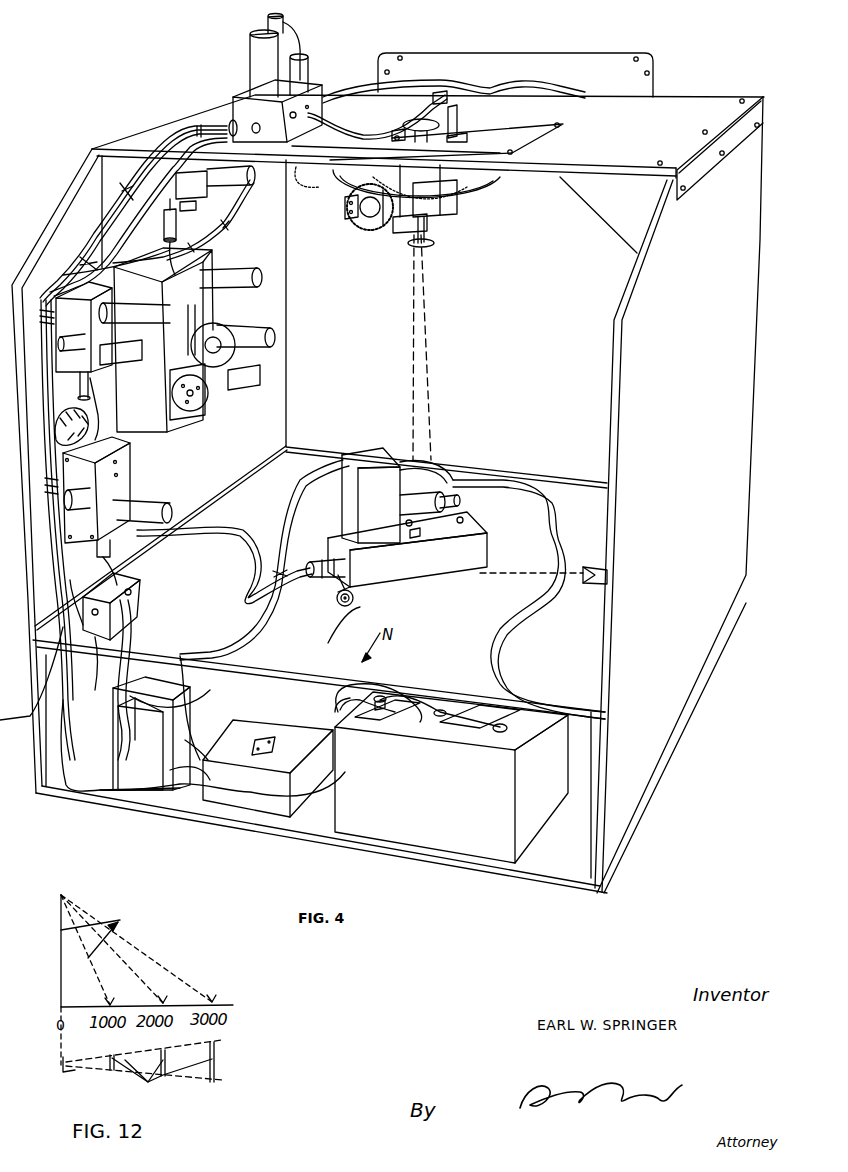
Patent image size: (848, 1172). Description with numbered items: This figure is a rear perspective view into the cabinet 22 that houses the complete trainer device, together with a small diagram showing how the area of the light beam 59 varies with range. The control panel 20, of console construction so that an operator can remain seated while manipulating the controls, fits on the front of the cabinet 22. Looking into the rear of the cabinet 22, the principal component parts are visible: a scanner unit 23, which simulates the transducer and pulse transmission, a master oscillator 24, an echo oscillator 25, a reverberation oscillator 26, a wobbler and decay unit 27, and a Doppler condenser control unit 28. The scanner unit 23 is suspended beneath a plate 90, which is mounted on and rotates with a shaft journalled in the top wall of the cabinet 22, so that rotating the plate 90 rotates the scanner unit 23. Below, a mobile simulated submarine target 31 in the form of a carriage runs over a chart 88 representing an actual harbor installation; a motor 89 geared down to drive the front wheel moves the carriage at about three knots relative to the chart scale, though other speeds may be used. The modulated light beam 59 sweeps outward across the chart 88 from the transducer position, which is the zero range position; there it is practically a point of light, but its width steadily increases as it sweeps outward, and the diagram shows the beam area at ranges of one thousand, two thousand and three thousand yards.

In FIG. 4, the control panel 20 is at (585, 53).
In FIG. 4, the cabinet 22 is at (648, 695).
In FIG. 4, the scanner unit 23 is at (445, 210).
In FIG. 4, the master oscillator 24 is at (342, 212).
In FIG. 4, the echo oscillator 25 is at (248, 93).
In FIG. 4, the reverberation oscillator 26 is at (215, 190).
In FIG. 4, the wobbler and decay unit 27 is at (217, 307).
In FIG. 4, the Doppler condenser control unit 28 is at (432, 95).
In FIG. 4, the mobile simulated submarine target 31 is at (463, 560).
In FIG. 4, the light beam 59 is at (427, 350).
In FIG. 12, the light beam 59 is at (142, 1006).
In FIG. 4, the chart 88 is at (562, 642).
In FIG. 4, the motor 89 is at (427, 575).
In FIG. 4, the plate 90 is at (475, 183).